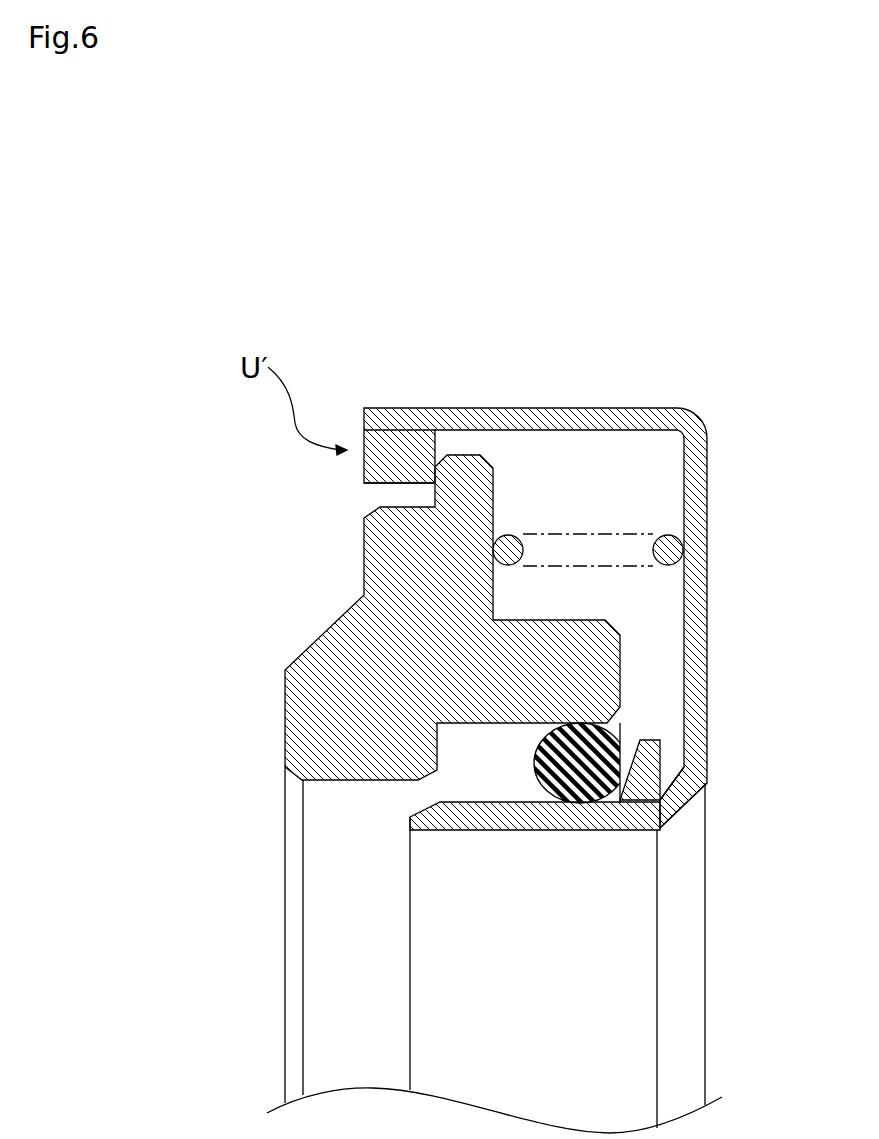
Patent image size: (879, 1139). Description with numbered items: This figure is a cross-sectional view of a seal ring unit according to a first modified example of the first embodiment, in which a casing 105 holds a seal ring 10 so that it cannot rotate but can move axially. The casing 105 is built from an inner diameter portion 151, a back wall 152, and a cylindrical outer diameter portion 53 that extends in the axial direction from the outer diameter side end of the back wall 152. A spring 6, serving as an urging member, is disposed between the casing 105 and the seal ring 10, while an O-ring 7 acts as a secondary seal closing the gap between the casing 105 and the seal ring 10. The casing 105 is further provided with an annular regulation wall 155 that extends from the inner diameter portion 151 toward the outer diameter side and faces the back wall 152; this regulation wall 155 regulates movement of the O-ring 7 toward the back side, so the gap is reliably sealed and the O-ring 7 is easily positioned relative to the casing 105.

The casing 105 is at (567, 409).
The outer diameter portion 53 is at (470, 408).
The regulation wall 155 is at (657, 832).
The seal ring 10 is at (276, 712).
The inner diameter portion 151 is at (547, 815).
The back wall 152 is at (690, 539).
The spring 6 is at (513, 535).
The O-ring 7 is at (533, 765).